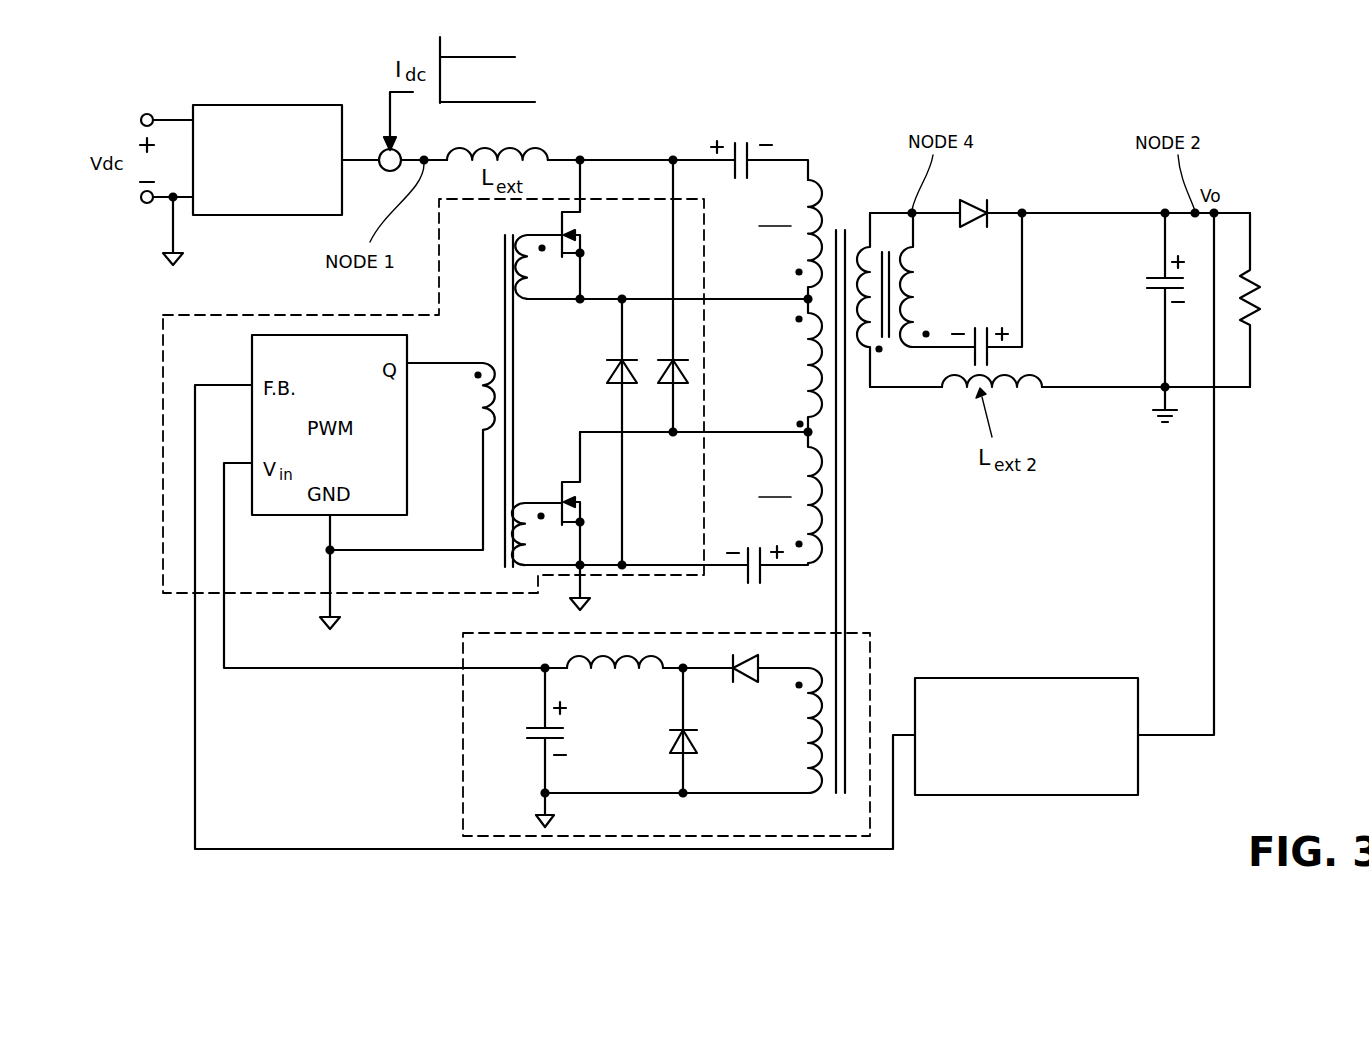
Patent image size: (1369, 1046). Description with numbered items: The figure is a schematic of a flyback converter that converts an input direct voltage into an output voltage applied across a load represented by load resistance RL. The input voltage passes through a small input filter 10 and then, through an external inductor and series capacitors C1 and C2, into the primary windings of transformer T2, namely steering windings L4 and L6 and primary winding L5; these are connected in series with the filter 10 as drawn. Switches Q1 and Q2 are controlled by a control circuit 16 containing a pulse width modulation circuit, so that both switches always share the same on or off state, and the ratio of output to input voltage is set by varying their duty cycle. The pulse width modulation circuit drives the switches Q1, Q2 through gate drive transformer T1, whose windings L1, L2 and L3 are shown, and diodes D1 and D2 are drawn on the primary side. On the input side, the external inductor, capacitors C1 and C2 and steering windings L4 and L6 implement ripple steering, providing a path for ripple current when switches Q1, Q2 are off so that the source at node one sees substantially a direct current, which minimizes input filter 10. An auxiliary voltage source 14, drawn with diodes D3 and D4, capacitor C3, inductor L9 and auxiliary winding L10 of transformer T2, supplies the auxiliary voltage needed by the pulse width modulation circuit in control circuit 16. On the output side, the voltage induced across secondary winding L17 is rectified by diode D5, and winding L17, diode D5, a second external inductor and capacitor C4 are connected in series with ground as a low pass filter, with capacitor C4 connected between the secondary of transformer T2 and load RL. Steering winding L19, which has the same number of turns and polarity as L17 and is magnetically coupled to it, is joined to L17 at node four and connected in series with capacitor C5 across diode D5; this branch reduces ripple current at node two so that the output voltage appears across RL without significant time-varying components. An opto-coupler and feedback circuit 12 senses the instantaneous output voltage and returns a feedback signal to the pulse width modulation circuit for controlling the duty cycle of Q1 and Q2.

The input filter 10 is at (237, 104).
The opto-coupler and feedback circuit 12 is at (1030, 676).
The auxiliary voltage source 14 is at (638, 734).
The control circuit 16 is at (410, 595).
The capacitor C1 is at (759, 146).
The capacitor C2 is at (755, 581).
The capacitor C3 is at (525, 730).
The capacitor C4 is at (1158, 300).
The capacitor C5 is at (987, 289).
The diode D1 is at (616, 432).
The diode D2 is at (664, 296).
The diode D3 is at (665, 730).
The diode D4 is at (770, 664).
The diode D5 is at (1104, 198).
The switch Q1 is at (586, 229).
The switch Q2 is at (586, 498).
The gate drive transformer T1 is at (493, 350).
The transformer T2 is at (830, 176).
The winding L1 of T1 L1 is at (483, 417).
The winding L2 of T1 L2 is at (527, 300).
The winding L3 of T1 L3 is at (527, 503).
The steering winding L4 is at (817, 183).
The primary winding L5 is at (813, 343).
The steering winding L6 is at (813, 467).
The inductor L9 is at (592, 660).
The secondary winding L10 is at (812, 755).
The secondary winding L17 is at (862, 247).
The steering winding L19 is at (912, 297).
The load resistance RL is at (1269, 300).